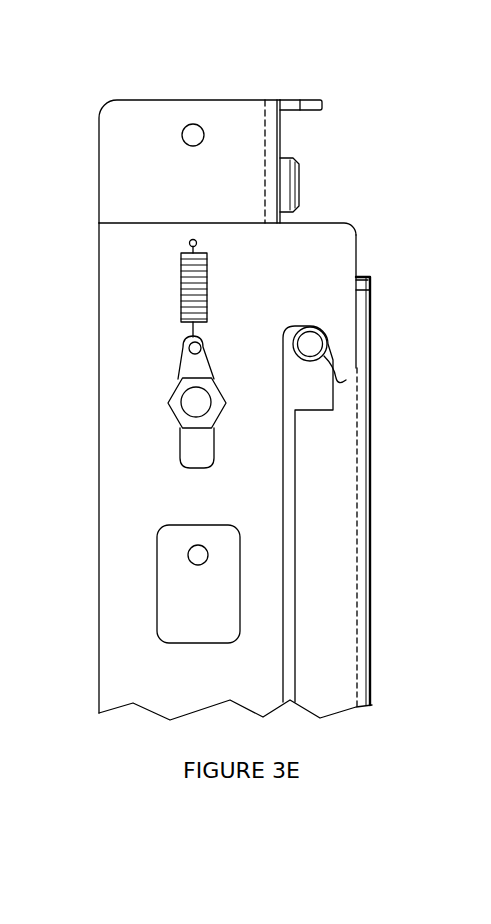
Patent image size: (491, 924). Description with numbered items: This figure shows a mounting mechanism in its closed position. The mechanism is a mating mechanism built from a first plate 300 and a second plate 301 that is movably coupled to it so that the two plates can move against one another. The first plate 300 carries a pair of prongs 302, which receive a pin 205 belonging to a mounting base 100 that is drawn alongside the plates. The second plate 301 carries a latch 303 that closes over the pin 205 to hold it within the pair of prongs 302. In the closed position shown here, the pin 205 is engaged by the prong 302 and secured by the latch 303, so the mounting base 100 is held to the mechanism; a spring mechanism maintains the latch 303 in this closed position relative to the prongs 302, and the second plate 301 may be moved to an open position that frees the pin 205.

The first plate 300 is at (147, 100).
The second plate 301 is at (110, 315).
The pair of prongs 302 is at (318, 392).
The latch 303 is at (347, 345).
The pin 205 is at (337, 373).
The mounting base 100 is at (352, 500).